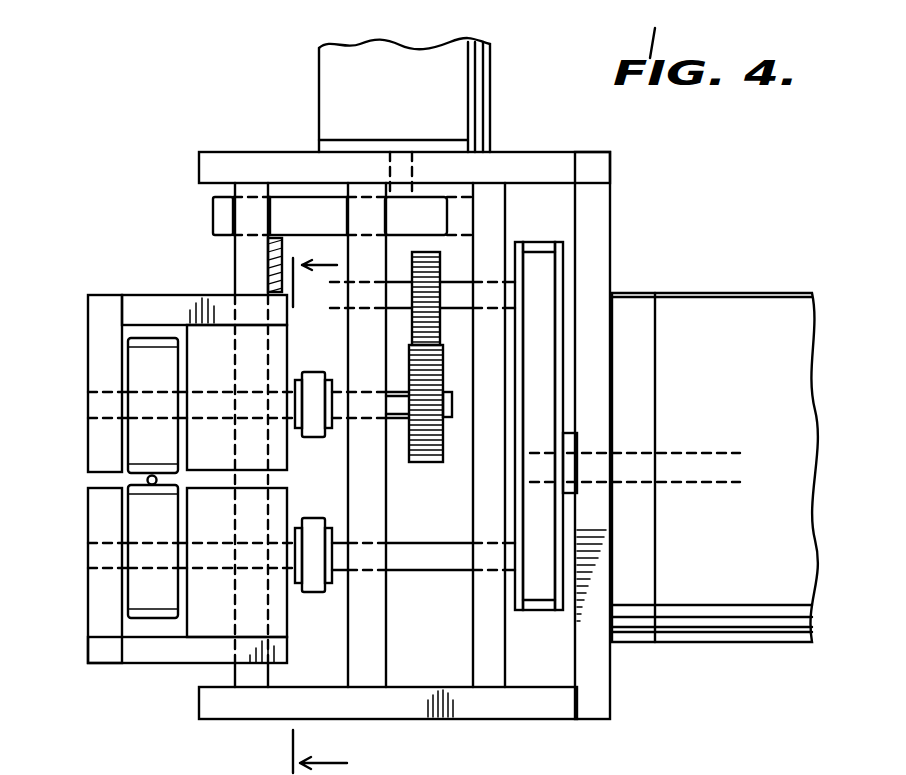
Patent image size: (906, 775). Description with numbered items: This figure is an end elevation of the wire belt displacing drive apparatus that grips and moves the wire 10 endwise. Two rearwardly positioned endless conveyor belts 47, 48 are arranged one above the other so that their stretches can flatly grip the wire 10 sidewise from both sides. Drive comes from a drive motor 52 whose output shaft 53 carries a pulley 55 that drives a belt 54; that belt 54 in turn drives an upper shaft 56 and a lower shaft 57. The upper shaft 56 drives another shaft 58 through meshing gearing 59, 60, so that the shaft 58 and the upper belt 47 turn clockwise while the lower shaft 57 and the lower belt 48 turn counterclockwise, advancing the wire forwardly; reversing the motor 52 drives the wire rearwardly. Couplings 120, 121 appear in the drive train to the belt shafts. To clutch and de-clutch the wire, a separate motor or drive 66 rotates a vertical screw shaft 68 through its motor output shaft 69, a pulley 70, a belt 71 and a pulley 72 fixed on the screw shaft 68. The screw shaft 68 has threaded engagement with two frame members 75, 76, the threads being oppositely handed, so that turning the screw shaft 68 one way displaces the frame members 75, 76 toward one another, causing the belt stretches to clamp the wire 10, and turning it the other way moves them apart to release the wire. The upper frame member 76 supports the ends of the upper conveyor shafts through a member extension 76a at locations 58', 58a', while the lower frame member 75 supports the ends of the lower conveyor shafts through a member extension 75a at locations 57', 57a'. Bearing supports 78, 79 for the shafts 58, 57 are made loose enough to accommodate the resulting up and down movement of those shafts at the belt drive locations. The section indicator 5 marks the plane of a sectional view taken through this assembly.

The section line 5- 5 is at (320, 515).
The wire 10 is at (147, 482).
The endless belt 47 is at (140, 368).
The endless belt 48 is at (138, 521).
The drive motor 52 is at (739, 290).
The output shaft 53 is at (572, 490).
The belt 54 is at (545, 370).
The pulley 55 is at (565, 437).
The shaft 56 is at (470, 246).
The lower shaft 57 is at (423, 593).
The shaft end support 57' is at (79, 573).
The shaft end support 57a' is at (101, 589).
The shaft 58 is at (409, 470).
The shaft end support 58' is at (79, 398).
The shaft end support 58a' is at (103, 415).
The gearing 59 is at (456, 280).
The gearing 60 is at (424, 466).
The motor or drive 66 is at (346, 58).
The vertical screw shaft 68 is at (278, 243).
The motor output shaft 69 is at (404, 166).
The pulley 70 is at (445, 196).
The belt 71 is at (337, 195).
The pulley 72 is at (212, 241).
The frame member 75 is at (148, 655).
The member extension 75a is at (105, 622).
The frame member 76 is at (143, 297).
The member extension 76a is at (96, 325).
The bearing support 78 is at (372, 430).
The bearing support 79 is at (363, 582).
The coupling 120 is at (313, 371).
The coupling 121 is at (312, 518).